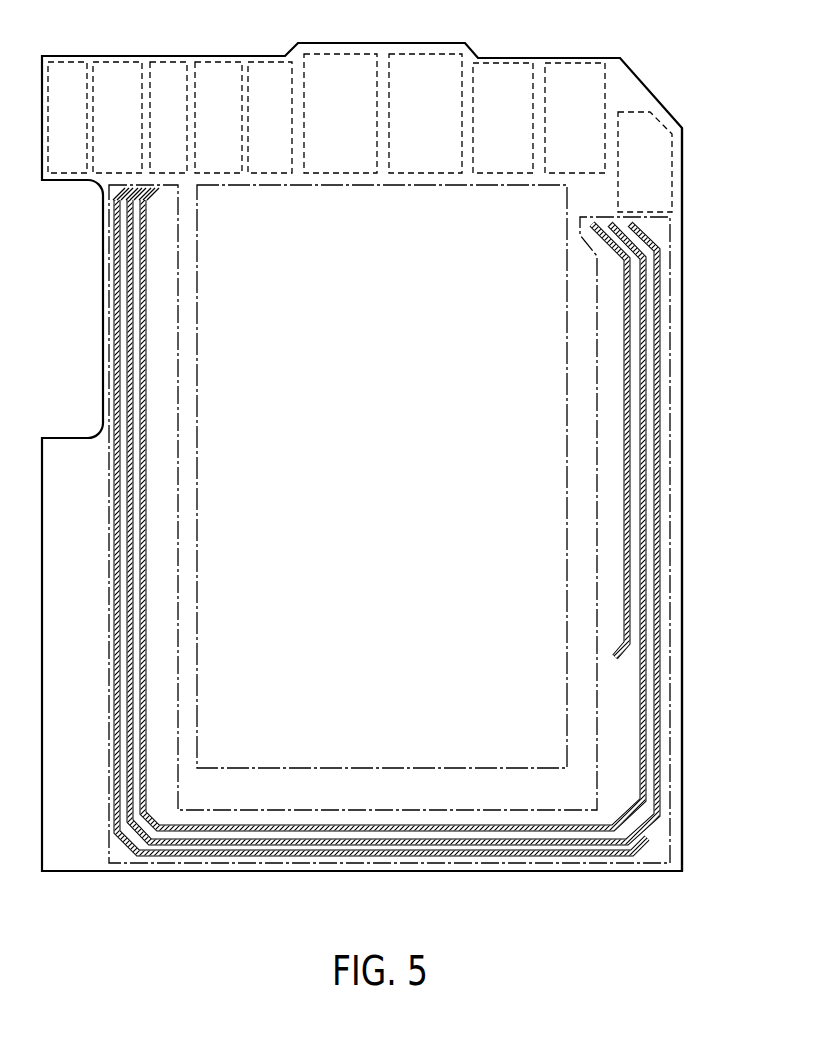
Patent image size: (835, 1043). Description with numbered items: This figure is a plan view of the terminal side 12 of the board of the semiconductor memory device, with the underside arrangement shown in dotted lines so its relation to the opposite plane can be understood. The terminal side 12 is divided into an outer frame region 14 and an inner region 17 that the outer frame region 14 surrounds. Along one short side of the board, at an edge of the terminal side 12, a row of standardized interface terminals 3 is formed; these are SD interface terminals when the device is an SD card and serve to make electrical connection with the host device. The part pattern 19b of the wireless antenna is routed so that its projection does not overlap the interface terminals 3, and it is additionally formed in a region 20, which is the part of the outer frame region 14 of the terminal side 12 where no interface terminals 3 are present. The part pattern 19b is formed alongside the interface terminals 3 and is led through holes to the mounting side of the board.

The interface terminals 3 is at (67, 72).
The terminal side 12 is at (674, 638).
The outer frame region 14 is at (72, 840).
The inner region 17 is at (245, 748).
The part pattern 19b is at (654, 545).
The region 20 is at (653, 838).